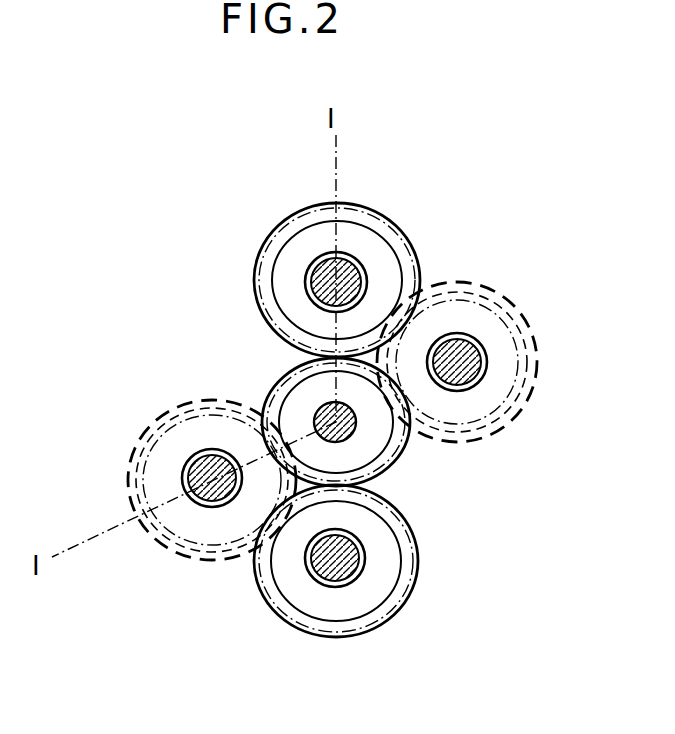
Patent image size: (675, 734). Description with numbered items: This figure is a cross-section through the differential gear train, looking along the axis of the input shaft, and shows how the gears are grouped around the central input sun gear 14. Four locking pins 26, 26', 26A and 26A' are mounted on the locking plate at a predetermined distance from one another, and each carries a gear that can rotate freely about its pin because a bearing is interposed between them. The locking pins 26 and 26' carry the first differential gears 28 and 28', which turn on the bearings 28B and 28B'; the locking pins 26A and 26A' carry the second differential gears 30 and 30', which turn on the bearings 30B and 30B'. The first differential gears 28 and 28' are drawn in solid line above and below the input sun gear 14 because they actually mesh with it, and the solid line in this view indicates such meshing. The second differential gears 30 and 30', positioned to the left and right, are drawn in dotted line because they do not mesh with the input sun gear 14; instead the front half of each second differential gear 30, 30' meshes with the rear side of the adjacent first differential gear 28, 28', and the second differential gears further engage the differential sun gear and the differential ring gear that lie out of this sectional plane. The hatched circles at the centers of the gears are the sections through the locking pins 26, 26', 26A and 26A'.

The input sun gear 14 is at (372, 442).
The locking pin 26 is at (298, 241).
The first differential gear 28 is at (337, 251).
The bearing 28B is at (391, 248).
The locking pin 26' is at (401, 560).
The first differential gear 28' is at (336, 593).
The bearing 28B' is at (329, 618).
The second differential gear 30 is at (169, 480).
The bearing 30B is at (147, 440).
The locking pin 26A is at (176, 547).
The second differential gear 30' is at (466, 335).
The bearing 30B' is at (526, 362).
The locking pin 26A' is at (511, 324).